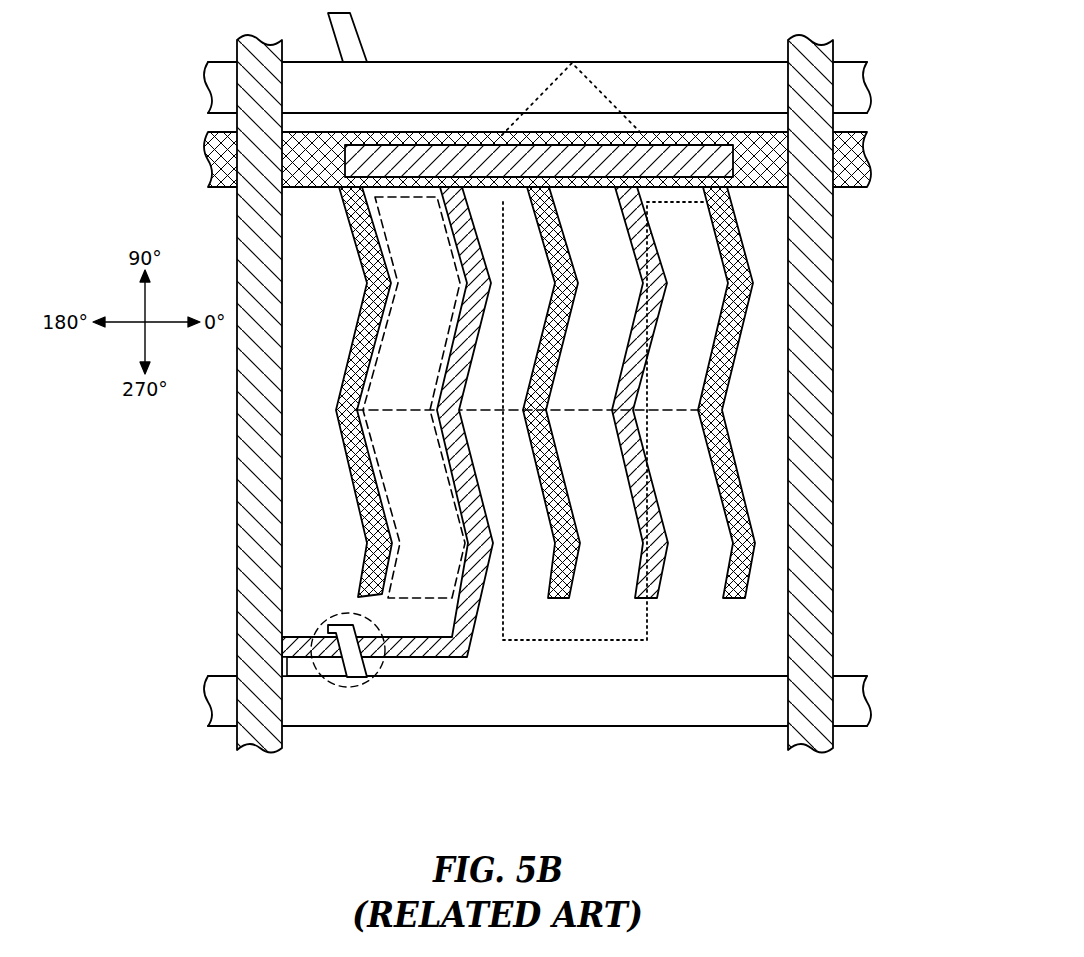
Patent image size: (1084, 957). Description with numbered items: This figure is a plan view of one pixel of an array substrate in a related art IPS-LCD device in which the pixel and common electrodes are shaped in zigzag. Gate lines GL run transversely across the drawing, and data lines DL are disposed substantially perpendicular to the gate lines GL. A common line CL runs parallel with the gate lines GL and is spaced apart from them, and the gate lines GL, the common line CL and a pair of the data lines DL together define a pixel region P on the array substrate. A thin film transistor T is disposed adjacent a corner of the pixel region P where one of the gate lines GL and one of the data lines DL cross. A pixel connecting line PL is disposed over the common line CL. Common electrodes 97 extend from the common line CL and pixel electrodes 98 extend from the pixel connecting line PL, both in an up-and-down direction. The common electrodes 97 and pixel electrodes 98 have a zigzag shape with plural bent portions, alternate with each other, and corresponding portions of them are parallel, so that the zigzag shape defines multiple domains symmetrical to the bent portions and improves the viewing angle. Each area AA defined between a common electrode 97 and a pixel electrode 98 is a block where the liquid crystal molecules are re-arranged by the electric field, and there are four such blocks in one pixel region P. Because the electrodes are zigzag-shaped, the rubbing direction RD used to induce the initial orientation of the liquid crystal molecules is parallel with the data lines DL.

The common line CL is at (871, 160).
The pixel connecting line PL is at (417, 160).
The common electrodes 97 is at (363, 222).
The pixel electrodes 98 is at (463, 343).
The rubbing direction RD is at (578, 640).
The area AA is at (357, 248).
The gate lines GL is at (869, 710).
The thin film transistor T is at (350, 690).
The data lines DL is at (262, 755).
The pixel region P is at (762, 423).